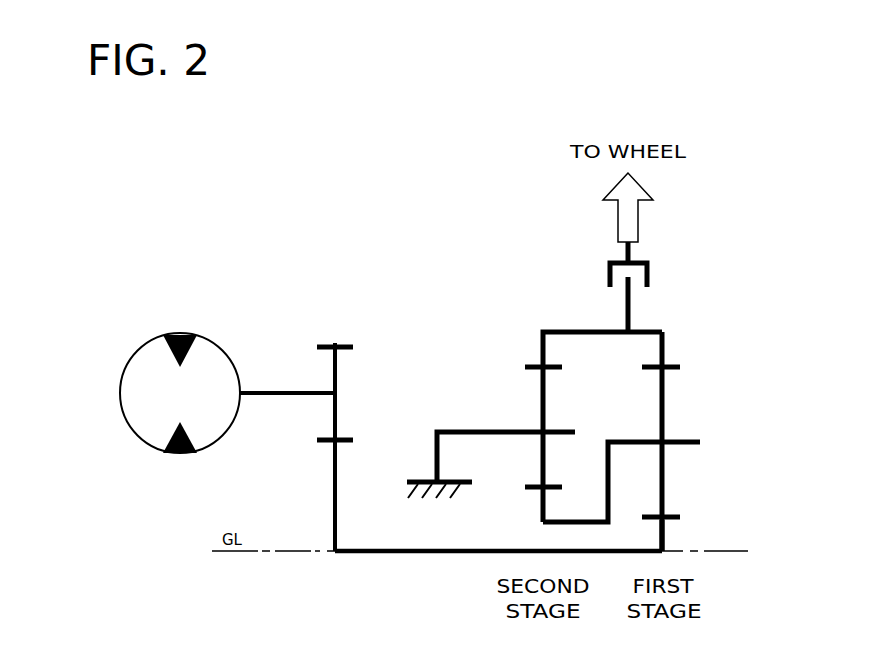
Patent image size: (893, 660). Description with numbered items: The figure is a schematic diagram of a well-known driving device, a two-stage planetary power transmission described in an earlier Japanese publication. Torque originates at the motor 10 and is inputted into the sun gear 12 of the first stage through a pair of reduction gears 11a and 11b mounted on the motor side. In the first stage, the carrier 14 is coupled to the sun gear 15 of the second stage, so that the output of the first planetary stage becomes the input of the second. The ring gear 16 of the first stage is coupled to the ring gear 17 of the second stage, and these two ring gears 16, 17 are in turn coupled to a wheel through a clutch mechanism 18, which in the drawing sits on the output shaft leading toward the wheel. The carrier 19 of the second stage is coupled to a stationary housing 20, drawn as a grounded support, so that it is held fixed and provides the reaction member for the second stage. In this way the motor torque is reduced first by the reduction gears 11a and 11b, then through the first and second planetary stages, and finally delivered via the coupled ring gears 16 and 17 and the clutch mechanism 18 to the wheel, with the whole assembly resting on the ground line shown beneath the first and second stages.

The motor 10 is at (215, 343).
The reduction gear 11a is at (341, 366).
The reduction gear 11b is at (333, 492).
The sun gear of a first stage 12 is at (665, 540).
The carrier of the first stage 14 is at (700, 440).
The sun gear of a second stage 15 is at (542, 512).
The ring gear of the first stage 16 is at (660, 330).
The ring gear of the second stage 17 is at (572, 330).
The clutch mechanism 18 is at (640, 263).
The carrier of the second stage 19 is at (495, 430).
The stationary housing 20 is at (424, 480).